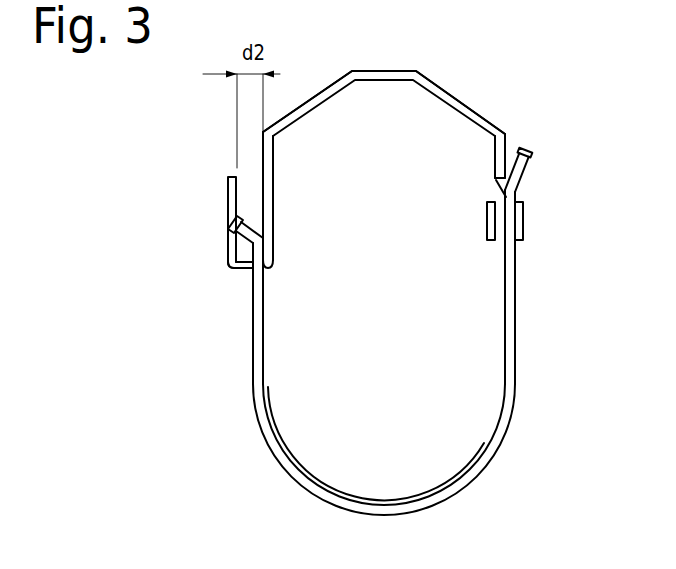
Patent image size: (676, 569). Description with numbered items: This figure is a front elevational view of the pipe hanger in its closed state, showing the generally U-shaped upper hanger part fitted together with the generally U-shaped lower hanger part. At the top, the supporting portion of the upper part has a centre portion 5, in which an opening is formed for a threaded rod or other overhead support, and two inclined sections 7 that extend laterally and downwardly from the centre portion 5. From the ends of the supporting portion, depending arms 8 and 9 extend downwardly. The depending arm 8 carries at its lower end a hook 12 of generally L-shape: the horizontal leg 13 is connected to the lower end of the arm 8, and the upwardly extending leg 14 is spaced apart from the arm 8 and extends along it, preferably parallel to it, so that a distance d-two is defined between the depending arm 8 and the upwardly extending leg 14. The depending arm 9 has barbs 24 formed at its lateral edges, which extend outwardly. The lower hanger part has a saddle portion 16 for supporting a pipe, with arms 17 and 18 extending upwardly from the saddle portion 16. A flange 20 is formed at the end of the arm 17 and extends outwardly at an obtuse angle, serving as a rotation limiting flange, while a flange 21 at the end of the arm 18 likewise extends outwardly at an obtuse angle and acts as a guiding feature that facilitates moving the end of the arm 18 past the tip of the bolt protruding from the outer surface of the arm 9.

The centre portion 5 is at (390, 78).
The inclined sections 7 is at (316, 97).
The depending arm 8 is at (273, 193).
The depending arm 9 is at (497, 154).
The hook 12 is at (216, 246).
The horizontal leg 13 is at (246, 268).
The upwardly extending leg 14 is at (229, 197).
The saddle portion 16 is at (478, 468).
The arm 17 is at (254, 344).
The arm 18 is at (509, 290).
The flange 20 is at (243, 228).
The flange 21 is at (526, 149).
The barbs 24 is at (513, 190).